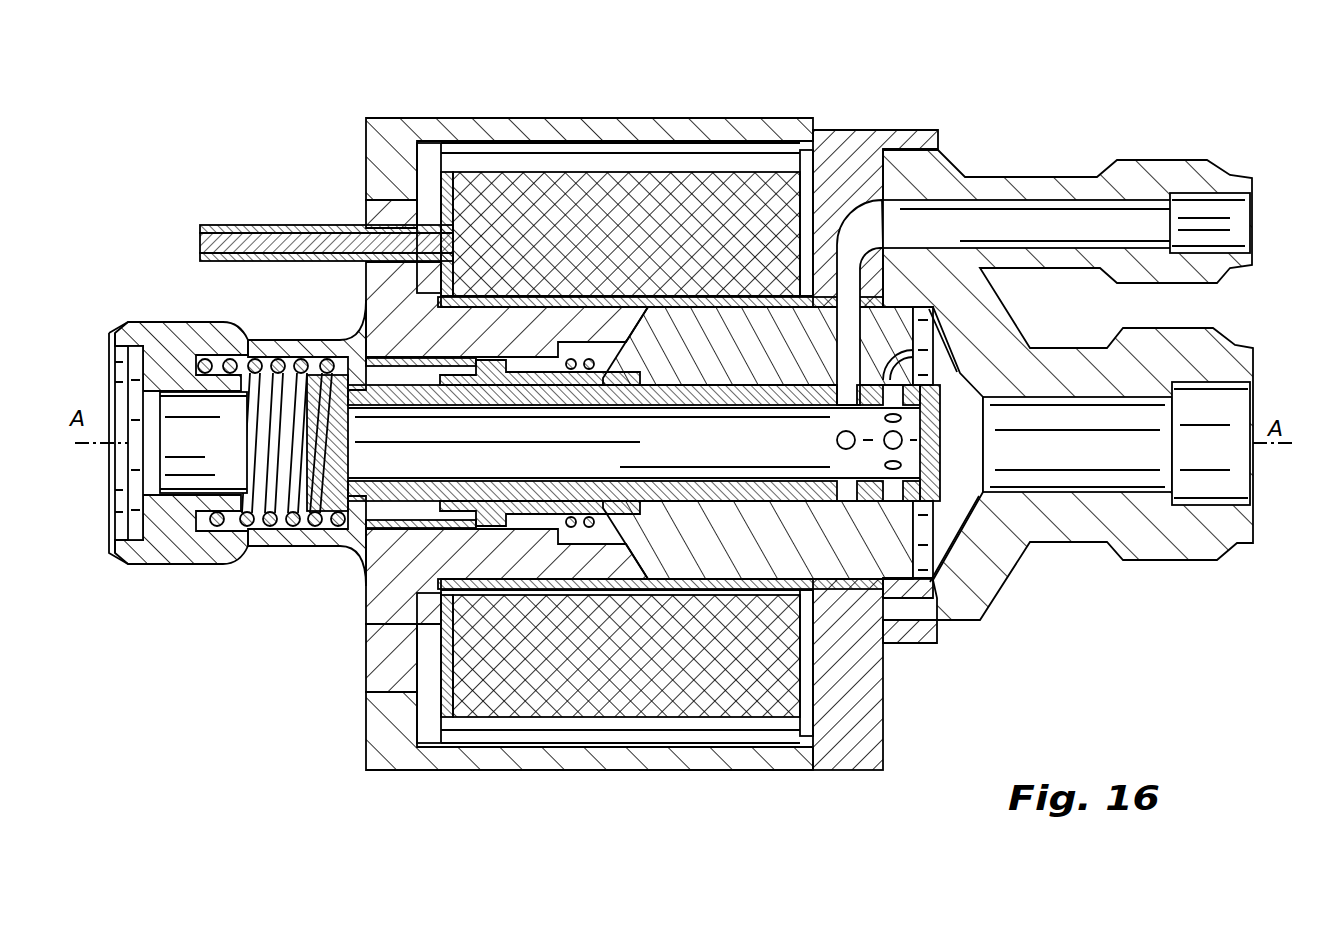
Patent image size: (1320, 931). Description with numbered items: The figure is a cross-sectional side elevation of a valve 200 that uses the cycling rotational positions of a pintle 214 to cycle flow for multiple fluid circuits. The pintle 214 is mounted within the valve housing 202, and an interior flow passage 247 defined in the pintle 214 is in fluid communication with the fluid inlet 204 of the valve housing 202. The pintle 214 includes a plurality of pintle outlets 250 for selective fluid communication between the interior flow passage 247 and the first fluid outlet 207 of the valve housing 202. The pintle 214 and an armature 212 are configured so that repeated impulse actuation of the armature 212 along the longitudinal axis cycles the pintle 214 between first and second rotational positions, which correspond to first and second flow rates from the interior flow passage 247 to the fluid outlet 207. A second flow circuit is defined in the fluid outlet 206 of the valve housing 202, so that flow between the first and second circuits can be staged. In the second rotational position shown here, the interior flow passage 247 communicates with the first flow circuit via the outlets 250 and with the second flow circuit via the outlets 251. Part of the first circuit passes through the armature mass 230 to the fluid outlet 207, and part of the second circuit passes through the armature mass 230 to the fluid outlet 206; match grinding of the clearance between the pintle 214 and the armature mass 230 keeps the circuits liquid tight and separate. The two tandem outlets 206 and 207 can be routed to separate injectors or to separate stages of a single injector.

The valve 200 is at (212, 131).
The valve housing 202 is at (470, 118).
The fluid inlet 204 is at (157, 566).
The fluid outlet 206 is at (1170, 560).
The first fluid outlet 207 is at (1172, 160).
The armature 212 is at (890, 540).
The pintle 214 is at (367, 390).
The armature mass 230 is at (923, 657).
The interior flow passage 247 is at (436, 469).
The pintle outlets 250 is at (840, 408).
The outlets 251 is at (943, 383).